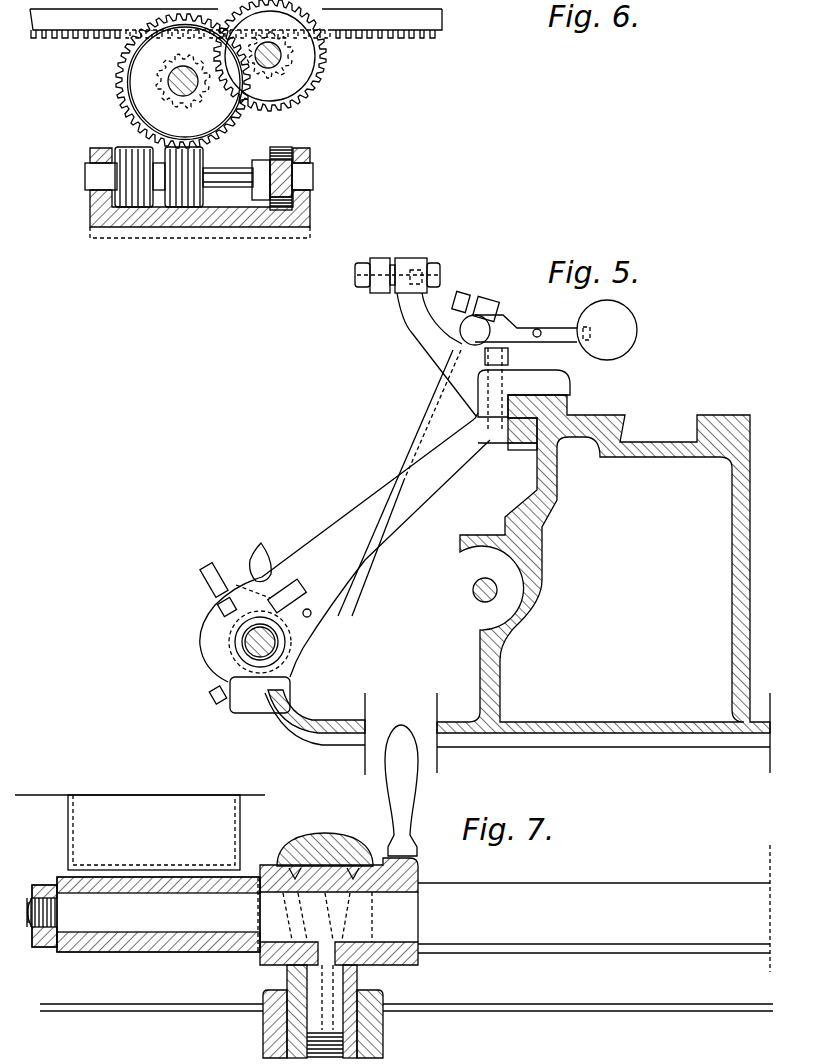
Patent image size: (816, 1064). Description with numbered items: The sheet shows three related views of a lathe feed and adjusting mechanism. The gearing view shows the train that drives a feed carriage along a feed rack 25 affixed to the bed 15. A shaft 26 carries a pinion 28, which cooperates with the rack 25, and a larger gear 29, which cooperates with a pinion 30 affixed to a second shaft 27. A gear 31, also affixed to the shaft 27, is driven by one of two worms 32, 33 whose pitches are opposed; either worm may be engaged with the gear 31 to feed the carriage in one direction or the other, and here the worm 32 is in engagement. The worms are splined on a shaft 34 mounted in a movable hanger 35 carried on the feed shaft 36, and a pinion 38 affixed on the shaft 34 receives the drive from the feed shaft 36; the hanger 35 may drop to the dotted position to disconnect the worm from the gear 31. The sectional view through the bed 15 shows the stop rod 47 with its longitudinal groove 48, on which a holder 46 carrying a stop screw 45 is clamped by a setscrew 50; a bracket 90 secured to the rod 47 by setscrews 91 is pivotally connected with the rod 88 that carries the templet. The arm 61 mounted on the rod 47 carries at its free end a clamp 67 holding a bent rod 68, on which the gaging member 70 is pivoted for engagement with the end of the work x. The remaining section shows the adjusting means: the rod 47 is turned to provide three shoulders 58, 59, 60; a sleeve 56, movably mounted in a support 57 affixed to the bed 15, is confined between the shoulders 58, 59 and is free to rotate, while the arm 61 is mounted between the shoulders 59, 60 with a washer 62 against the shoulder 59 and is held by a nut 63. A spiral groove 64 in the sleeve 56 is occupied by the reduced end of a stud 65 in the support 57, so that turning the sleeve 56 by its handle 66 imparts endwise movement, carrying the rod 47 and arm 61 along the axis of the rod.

In FIG. 5, the bed 15 is at (663, 458).
In FIG. 7, the bed 15 is at (517, 1006).
In FIG. 6, the feed rack 25 is at (236, 42).
In FIG. 5, the feed rack 25 is at (520, 448).
In FIG. 6, the shaft 26 is at (278, 66).
In FIG. 6, the shaft 27 is at (177, 88).
In FIG. 6, the pinion 28 is at (280, 50).
In FIG. 6, the gear 29 is at (305, 95).
In FIG. 6, the pinion 30 is at (160, 62).
In FIG. 6, the gear 31 is at (120, 80).
In FIG. 6, the worm 32 is at (184, 227).
In FIG. 6, the worm 33 is at (133, 227).
In FIG. 6, the shaft 34 is at (307, 180).
In FIG. 6, the hanger 35 is at (312, 212).
In FIG. 5, the feed shaft 36 is at (473, 590).
In FIG. 6, the pinion 38 is at (287, 147).
In FIG. 5, the stop screw 45 is at (307, 609).
In FIG. 5, the holder 46 is at (238, 575).
In FIG. 5, the stop rod 47 is at (247, 641).
In FIG. 7, the stop rod 47 is at (700, 883).
In FIG. 7, the longitudinal groove 48 is at (613, 946).
In FIG. 5, the setscrew 50 is at (212, 688).
In FIG. 7, the sleeve 56 is at (418, 870).
In FIG. 5, the support 57 is at (297, 657).
In FIG. 7, the support 57 is at (332, 836).
In FIG. 7, the shoulder 58 is at (418, 917).
In FIG. 7, the shoulder 59 is at (257, 913).
In FIG. 7, the shoulder 60 is at (28, 923).
In FIG. 5, the arm 61 is at (410, 451).
In FIG. 7, the arm 61 is at (140, 832).
In FIG. 7, the washer 62 is at (259, 877).
In FIG. 7, the nut 63 is at (43, 883).
In FIG. 7, the spiral groove 64 is at (296, 868).
In FIG. 7, the stud 65 is at (310, 978).
In FIG. 5, the handle 66 is at (261, 552).
In FIG. 7, the handle 66 is at (418, 785).
In FIG. 5, the clamp 67 is at (476, 296).
In FIG. 5, the bent rod 68 is at (467, 327).
In FIG. 5, the gaging member 70 is at (538, 328).
In FIG. 5, the rod 88 is at (382, 258).
In FIG. 5, the bracket 90 is at (441, 353).
In FIG. 5, the setscrews 91 is at (221, 607).
In FIG. 5, the work x is at (638, 330).